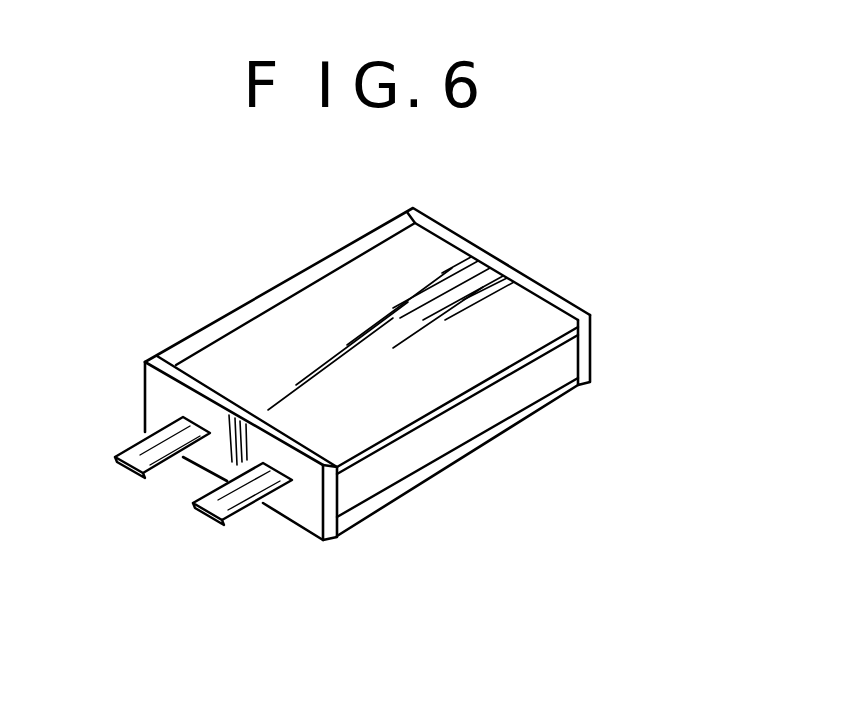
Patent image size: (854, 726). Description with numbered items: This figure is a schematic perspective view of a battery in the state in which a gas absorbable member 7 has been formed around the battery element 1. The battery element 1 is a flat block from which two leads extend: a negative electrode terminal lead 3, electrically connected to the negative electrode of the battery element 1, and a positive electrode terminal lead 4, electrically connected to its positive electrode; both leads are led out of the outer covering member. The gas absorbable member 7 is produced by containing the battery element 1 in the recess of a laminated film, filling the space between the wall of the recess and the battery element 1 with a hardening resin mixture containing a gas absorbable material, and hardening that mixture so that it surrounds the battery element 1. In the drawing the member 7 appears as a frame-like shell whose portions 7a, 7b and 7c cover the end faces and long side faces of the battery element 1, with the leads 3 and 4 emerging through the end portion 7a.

The battery element 1 is at (330, 290).
The negative electrode terminal lead 3 is at (128, 468).
The positive electrode terminal lead 4 is at (212, 513).
The gas absorbable member 7 is at (556, 279).
The front frame plate 7a is at (303, 513).
The rear frame plate 7b is at (483, 247).
The side frame strips 7c is at (258, 305).